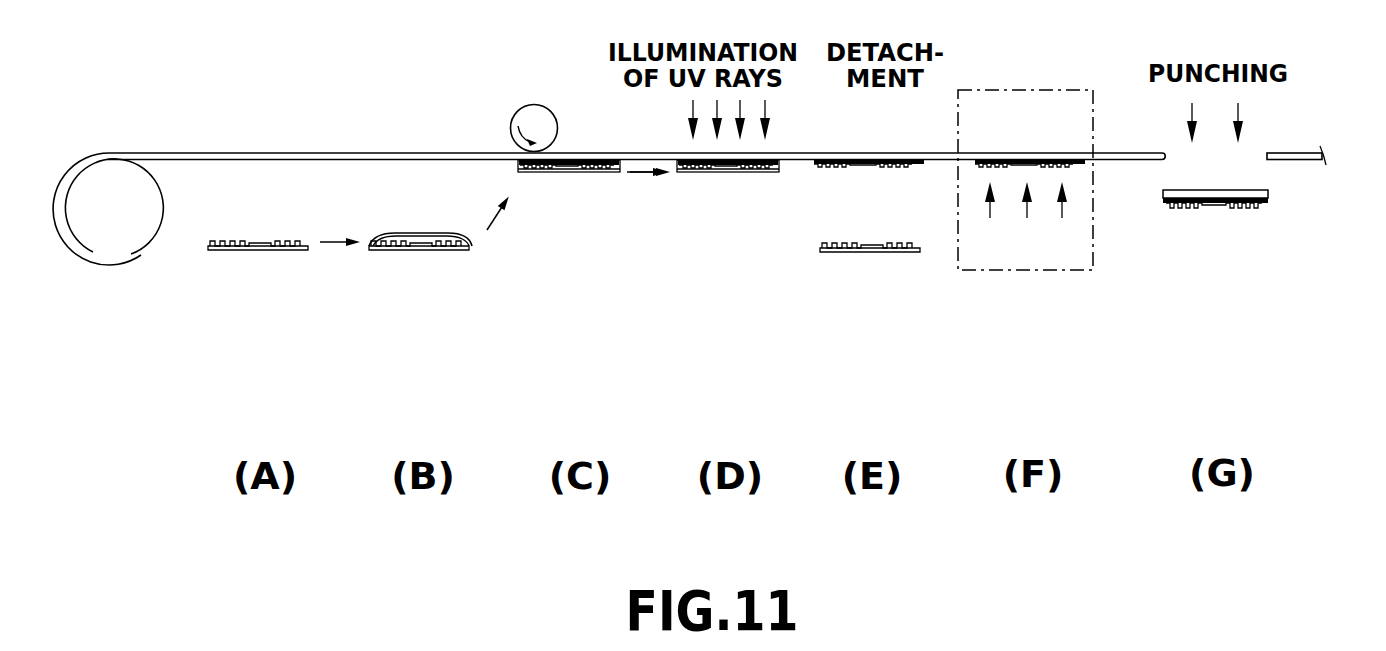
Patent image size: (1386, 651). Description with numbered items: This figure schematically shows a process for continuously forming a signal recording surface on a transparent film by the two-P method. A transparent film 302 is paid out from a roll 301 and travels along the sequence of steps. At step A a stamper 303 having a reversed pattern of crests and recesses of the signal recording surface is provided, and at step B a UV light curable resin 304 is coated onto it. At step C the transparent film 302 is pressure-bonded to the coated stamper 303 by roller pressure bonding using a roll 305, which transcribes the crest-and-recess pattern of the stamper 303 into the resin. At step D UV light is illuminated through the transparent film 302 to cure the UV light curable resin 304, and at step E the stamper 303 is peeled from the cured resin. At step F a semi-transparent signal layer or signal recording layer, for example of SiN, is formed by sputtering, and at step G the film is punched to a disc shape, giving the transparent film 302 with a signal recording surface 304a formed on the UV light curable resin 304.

The roll 301 is at (102, 242).
The transparent film 302 is at (268, 155).
The stamper 303 is at (263, 253).
The UV light curable resin 304 is at (430, 234).
The signal recording surface 304a is at (1235, 207).
The roll 305 is at (532, 118).